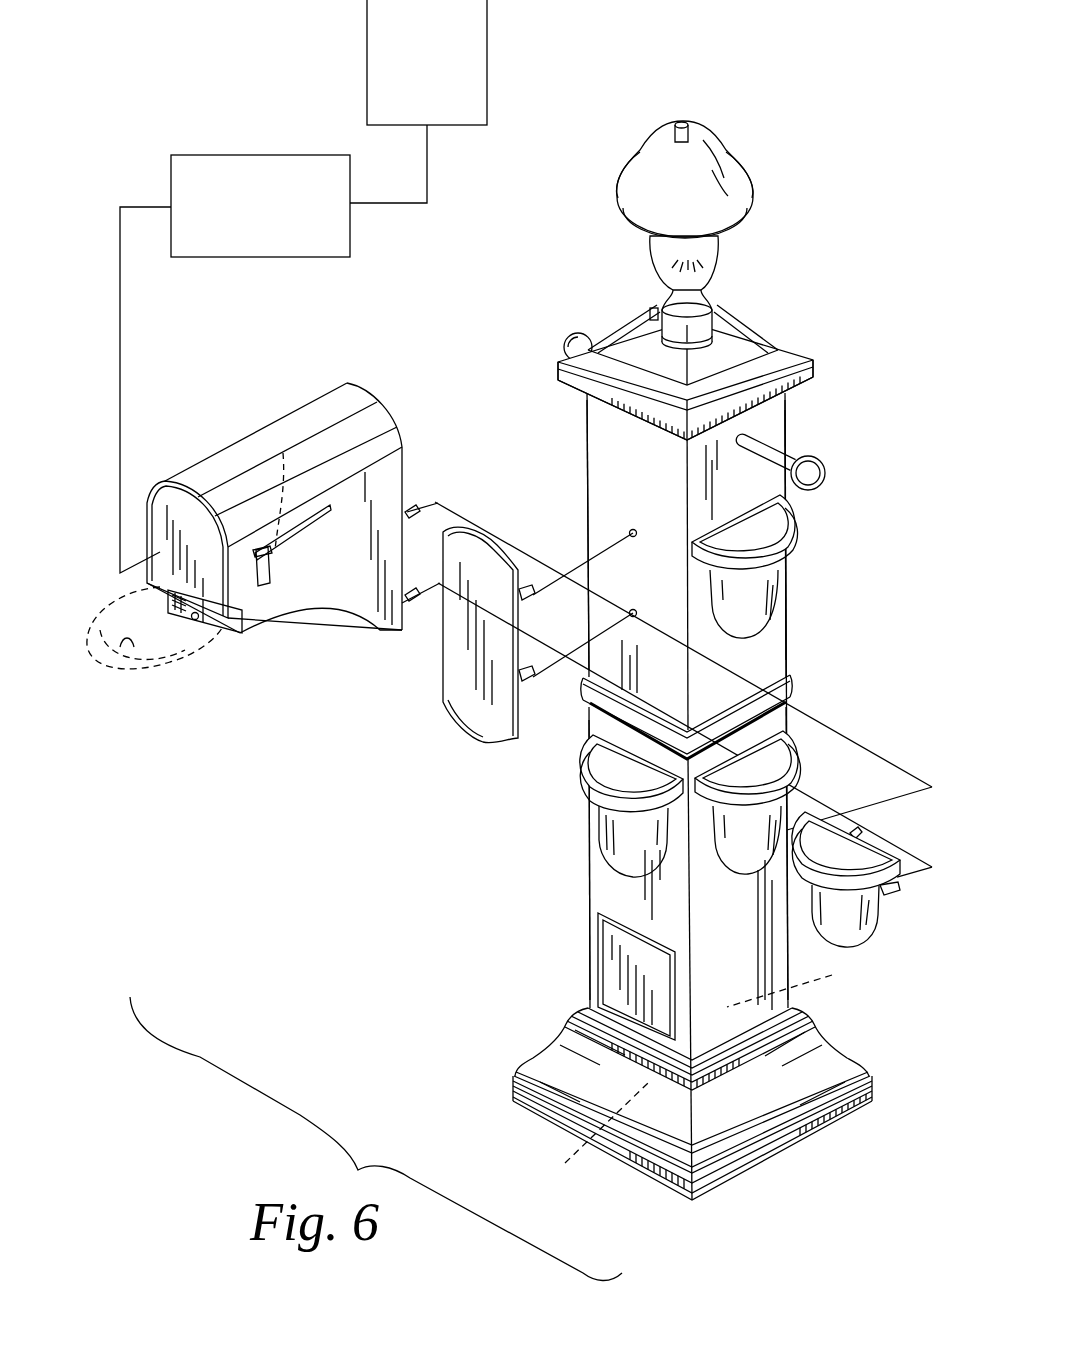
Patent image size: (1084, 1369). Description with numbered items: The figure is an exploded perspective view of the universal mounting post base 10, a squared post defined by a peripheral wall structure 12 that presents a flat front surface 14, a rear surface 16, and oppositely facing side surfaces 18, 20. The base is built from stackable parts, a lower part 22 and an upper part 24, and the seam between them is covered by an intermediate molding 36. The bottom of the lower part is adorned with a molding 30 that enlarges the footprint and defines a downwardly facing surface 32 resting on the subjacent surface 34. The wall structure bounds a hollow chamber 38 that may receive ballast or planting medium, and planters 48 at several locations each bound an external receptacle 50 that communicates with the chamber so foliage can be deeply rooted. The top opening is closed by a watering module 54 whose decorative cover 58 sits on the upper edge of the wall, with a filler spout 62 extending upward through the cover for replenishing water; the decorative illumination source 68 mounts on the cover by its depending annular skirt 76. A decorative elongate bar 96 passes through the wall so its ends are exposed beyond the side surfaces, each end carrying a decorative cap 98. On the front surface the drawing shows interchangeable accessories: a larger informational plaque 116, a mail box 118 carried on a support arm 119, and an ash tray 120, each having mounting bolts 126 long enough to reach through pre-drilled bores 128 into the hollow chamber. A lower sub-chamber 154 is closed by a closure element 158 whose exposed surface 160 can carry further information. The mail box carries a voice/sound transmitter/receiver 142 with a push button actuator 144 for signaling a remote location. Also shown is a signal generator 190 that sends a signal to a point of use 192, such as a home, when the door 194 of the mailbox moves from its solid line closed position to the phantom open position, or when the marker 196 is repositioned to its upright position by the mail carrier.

The mounting post base 10 is at (792, 136).
The peripheral wall structure 12 is at (693, 777).
The front surface 14 is at (600, 889).
The rear surface 16 is at (787, 633).
The side surface 18 is at (587, 452).
The side surface 20 is at (786, 403).
The lower part 22 is at (590, 915).
The upper part 24 is at (588, 482).
The molding 30 is at (725, 1106).
The downwardly facing surface 32 is at (805, 1132).
The subjacent surface 34 is at (770, 1205).
The intermediate molding 36 is at (792, 681).
The hollow chamber 38 is at (795, 984).
The planter 48 is at (634, 664).
The external receptacle 50 is at (748, 534).
The watering module 54 is at (711, 354).
The decorative cover 58 is at (757, 335).
The filler spout 62 is at (650, 310).
The decorative illumination source 68 is at (767, 192).
The annular skirt 76 is at (733, 328).
The elongate bar 96 is at (786, 433).
The decorative caps 98 is at (569, 337).
The larger informational plaque 116 is at (462, 700).
The mail box 118 is at (268, 585).
The support arm 119 is at (313, 595).
The ash tray 120 is at (850, 945).
The mounting bolts 126 is at (410, 522).
The pre-drilled bores 128 is at (637, 611).
The voice/sound transmitter/receiver 142 is at (177, 630).
The push button actuator 144 is at (192, 624).
The sub-chamber 154 is at (581, 1137).
The closure element 158 is at (570, 976).
The exposed surface 160 is at (610, 995).
The signal generator 190 is at (241, 251).
The point of use 192 is at (408, 120).
The door 194 is at (127, 640).
The marker 196 is at (267, 550).